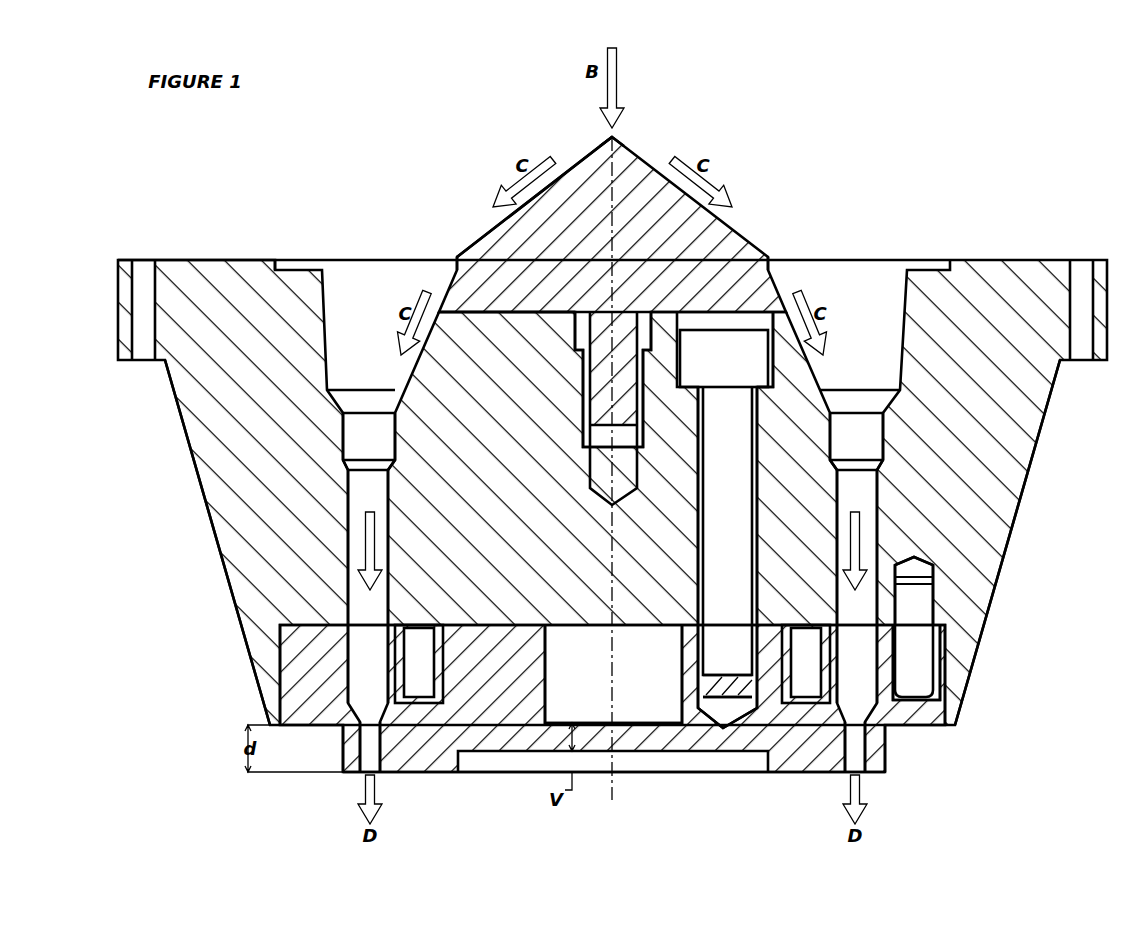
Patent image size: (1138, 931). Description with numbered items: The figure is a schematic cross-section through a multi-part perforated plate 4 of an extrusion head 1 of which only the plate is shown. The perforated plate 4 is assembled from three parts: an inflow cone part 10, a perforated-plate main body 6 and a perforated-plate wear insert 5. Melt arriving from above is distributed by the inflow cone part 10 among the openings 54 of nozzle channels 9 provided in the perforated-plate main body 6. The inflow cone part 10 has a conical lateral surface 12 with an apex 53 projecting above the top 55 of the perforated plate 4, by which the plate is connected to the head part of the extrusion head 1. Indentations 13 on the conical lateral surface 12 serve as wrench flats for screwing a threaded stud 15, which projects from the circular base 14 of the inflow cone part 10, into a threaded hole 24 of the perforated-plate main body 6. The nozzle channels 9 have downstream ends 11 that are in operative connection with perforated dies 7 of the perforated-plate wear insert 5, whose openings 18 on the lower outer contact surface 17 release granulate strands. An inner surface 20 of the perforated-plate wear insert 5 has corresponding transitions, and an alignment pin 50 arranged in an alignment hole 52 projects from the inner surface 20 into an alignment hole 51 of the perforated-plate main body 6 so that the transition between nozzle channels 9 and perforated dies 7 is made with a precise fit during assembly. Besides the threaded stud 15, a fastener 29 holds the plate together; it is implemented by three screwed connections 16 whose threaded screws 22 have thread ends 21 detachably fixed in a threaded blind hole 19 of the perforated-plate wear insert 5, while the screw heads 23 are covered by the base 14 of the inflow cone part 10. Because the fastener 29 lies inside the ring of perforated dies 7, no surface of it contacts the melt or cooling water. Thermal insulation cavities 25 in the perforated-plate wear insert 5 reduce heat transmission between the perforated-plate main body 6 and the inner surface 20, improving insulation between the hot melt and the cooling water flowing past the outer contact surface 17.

The extrusion head 1 is at (968, 112).
The perforated plate 4 is at (990, 258).
The perforated-plate wear insert 5 is at (500, 728).
The perforated-plate main body 6 is at (1026, 480).
The perforated dies 7 is at (358, 742).
The nozzle channels 9 is at (350, 516).
The inflow cone part 10 is at (648, 160).
The downstream ends 11 is at (372, 630).
The conical lateral surface 12 is at (590, 160).
The indentations 13 is at (455, 263).
The circular base 14 is at (512, 314).
The threaded stud 15 is at (586, 378).
The screwed connections 16 is at (756, 518).
The outer contact surface 17 is at (405, 775).
The openings 18 is at (364, 778).
The threaded blind hole 19 is at (703, 692).
The inner surface 20 is at (522, 630).
The thread ends 21 is at (708, 648).
The threaded screws 22 is at (697, 535).
The screw heads 23 is at (776, 366).
The threaded hole 24 is at (645, 400).
The thermal insulation cavities 25 is at (418, 690).
The fastener 29 is at (728, 328).
The alignment pin 50 is at (920, 612).
The alignment hole 51 is at (935, 577).
The alignment hole 52 is at (935, 662).
The apex 53 is at (617, 135).
The openings 54 is at (366, 464).
The top 55 is at (222, 262).